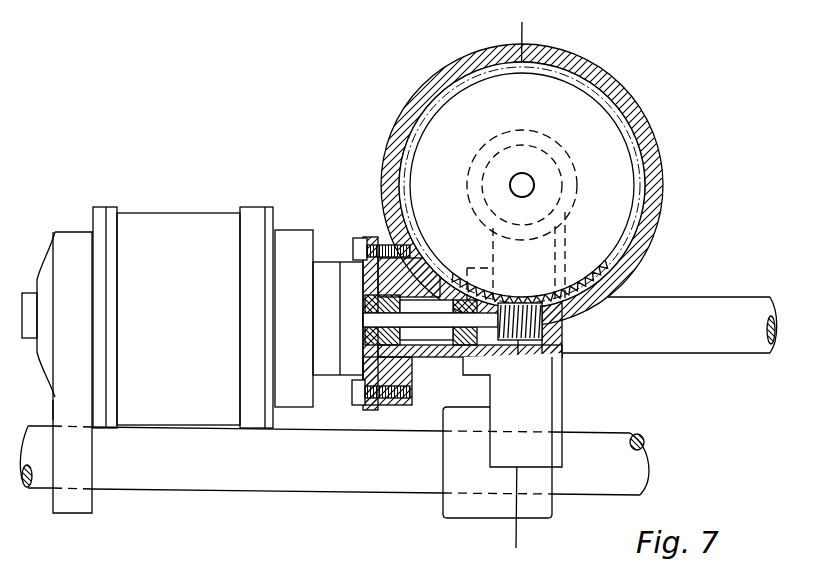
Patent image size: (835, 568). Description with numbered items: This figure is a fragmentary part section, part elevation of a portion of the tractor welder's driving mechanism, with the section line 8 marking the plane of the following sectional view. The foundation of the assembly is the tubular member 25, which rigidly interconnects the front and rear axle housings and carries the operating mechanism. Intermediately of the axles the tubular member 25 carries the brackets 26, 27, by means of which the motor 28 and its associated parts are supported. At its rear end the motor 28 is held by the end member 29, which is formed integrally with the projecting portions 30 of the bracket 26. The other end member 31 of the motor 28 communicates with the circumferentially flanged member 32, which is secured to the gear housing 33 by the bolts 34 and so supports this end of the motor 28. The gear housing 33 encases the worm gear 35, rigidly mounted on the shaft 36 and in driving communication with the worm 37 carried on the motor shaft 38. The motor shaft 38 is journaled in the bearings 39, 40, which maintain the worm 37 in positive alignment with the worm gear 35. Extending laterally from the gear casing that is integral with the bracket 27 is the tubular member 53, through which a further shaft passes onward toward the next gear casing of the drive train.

The section line 8— 8 is at (527, 22).
The tubular member 25 is at (598, 441).
The bracket 26 is at (75, 503).
The bracket 27 is at (483, 507).
The motor 28 is at (178, 222).
The end member 29 is at (67, 348).
The projecting portions 30 is at (57, 409).
The end member 31 is at (292, 233).
The circumferentially flanged member 32 is at (369, 234).
The gear housing 33 is at (386, 133).
The bolts 34 is at (353, 243).
The worm gear 35 is at (578, 102).
The shaft 36 is at (531, 181).
The worm 37 is at (560, 332).
The motor shaft 38 is at (440, 332).
The bearing 39 is at (476, 342).
The bearing 40 is at (399, 328).
The tubular member 53 is at (733, 307).